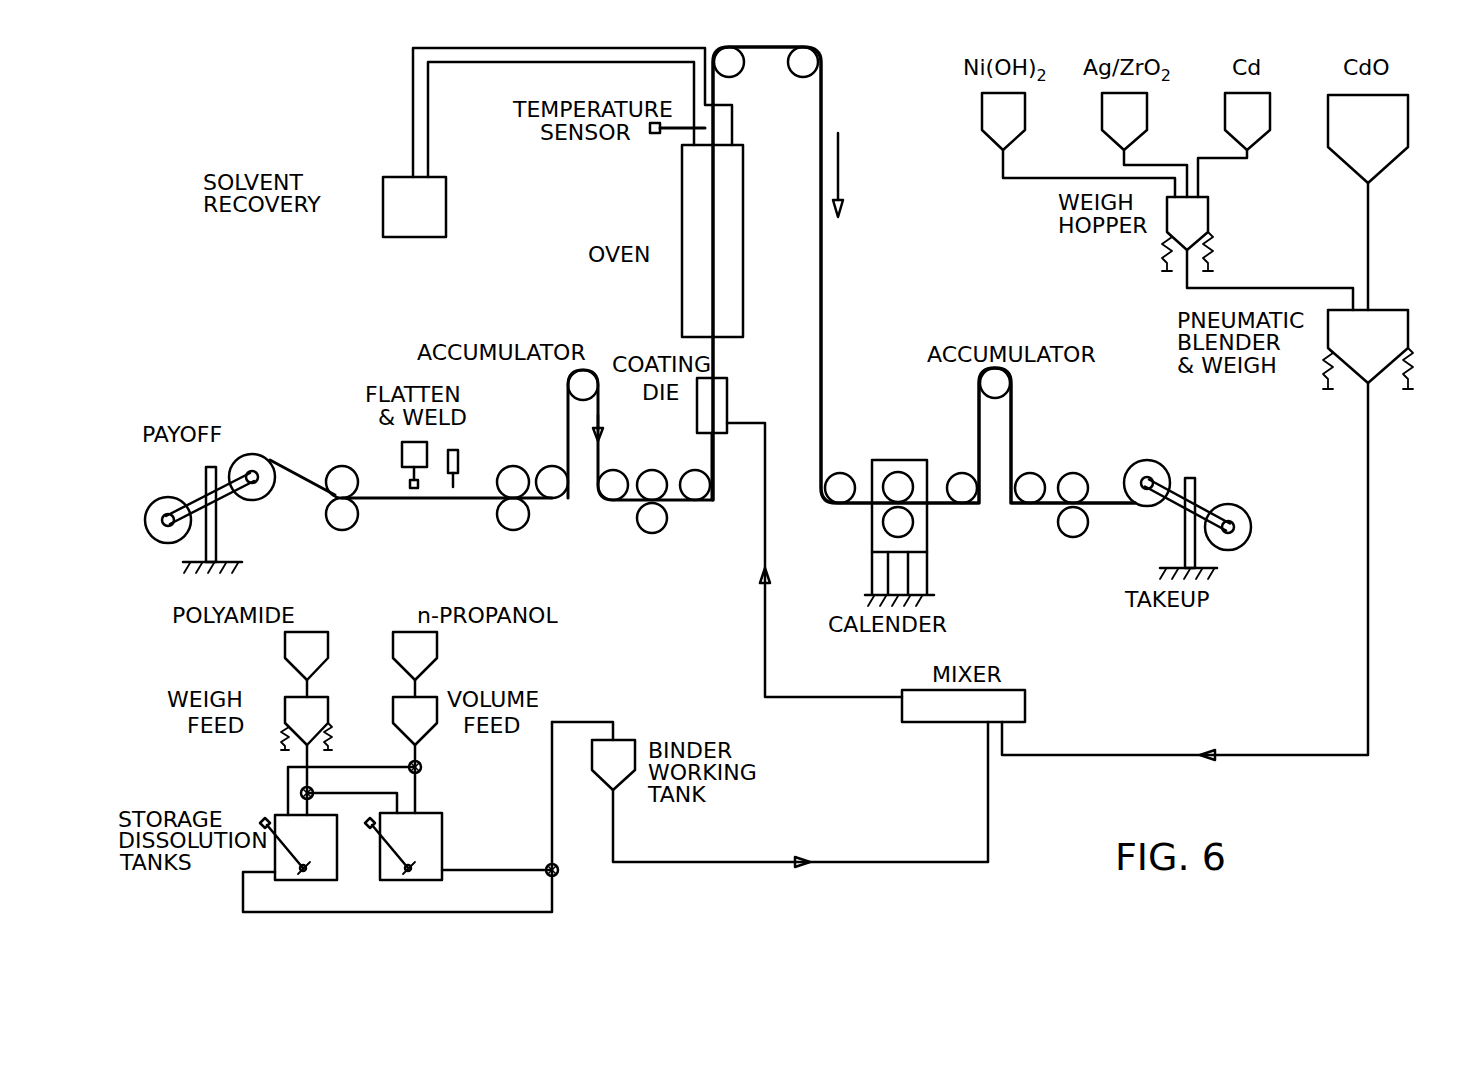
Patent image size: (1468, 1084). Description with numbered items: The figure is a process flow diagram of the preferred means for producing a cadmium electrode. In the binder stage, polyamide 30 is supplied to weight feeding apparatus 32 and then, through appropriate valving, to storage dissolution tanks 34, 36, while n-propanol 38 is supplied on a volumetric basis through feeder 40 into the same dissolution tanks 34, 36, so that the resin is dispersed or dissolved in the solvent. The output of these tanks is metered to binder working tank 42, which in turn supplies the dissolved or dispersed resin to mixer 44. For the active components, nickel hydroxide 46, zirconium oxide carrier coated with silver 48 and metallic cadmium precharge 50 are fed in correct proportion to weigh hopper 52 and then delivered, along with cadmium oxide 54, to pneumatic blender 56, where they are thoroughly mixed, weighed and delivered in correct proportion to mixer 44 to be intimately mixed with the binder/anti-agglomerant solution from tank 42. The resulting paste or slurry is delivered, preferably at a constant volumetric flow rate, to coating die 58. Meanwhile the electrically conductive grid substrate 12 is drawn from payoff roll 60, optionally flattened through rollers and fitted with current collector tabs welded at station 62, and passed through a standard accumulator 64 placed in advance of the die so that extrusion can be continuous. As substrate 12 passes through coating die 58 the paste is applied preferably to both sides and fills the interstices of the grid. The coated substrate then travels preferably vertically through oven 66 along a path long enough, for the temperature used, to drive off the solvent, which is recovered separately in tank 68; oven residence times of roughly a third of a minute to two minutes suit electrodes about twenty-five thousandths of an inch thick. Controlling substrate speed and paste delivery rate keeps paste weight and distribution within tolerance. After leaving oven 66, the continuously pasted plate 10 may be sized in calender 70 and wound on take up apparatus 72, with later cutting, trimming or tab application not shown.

The continuously pasted plate 10 is at (978, 429).
The electrically conductive substrate 12 is at (672, 503).
The polyamide 30 is at (285, 645).
The weight feeding apparatus 32 is at (328, 708).
The storage dissolution tank 34 is at (320, 882).
The storage dissolution tank 36 is at (442, 845).
The n-propanol 38 is at (437, 648).
The feeder 40 is at (425, 733).
The binder working tank 42 is at (622, 740).
The mixer 44 is at (1026, 711).
The nickel hydroxide 46 is at (984, 137).
The zirconium oxide carrier coated with silver 48 is at (1104, 137).
The metallic cadmium precharge 50 is at (1227, 137).
The weigh hopper 52 is at (1209, 210).
The cadmium oxide 54 is at (1338, 165).
The pneumatic blender 56 is at (1409, 331).
The coating die 58 is at (728, 391).
The payoff roll 60 is at (258, 458).
The station 62 is at (472, 461).
The accumulator 64 is at (568, 421).
The oven 66 is at (682, 208).
The tank 68 is at (447, 193).
The calender 70 is at (897, 459).
The take up apparatus 72 is at (1200, 503).